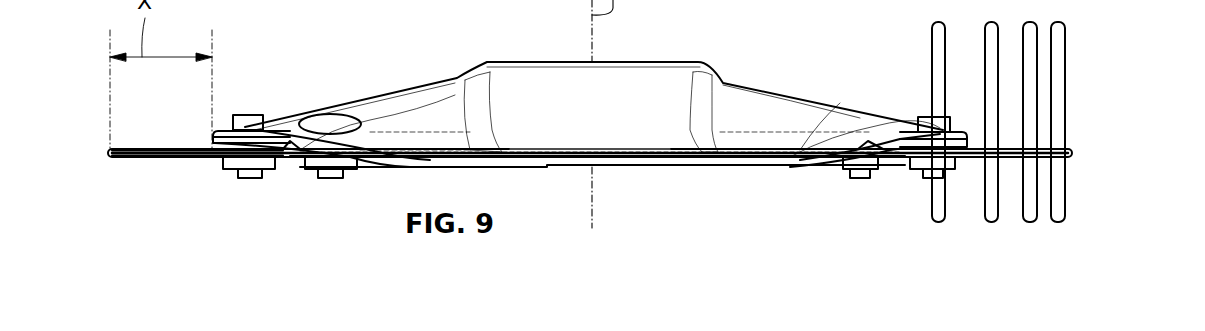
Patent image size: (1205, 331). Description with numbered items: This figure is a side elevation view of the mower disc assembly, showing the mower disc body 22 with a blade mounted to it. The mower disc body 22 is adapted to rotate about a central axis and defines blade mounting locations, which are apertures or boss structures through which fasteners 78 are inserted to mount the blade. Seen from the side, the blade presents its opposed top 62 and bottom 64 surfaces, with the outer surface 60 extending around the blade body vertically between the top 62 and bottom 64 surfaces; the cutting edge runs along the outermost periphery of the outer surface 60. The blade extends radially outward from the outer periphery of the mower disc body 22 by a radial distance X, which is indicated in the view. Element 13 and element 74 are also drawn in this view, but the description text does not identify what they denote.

The wire rods 13 is at (1068, 32).
The mower disc body 22 is at (742, 102).
The outer surface 60 is at (1076, 157).
The top surface 62 is at (147, 148).
The bottom surface 64 is at (162, 160).
The aperture 74 is at (330, 220).
The fasteners 78 is at (240, 115).